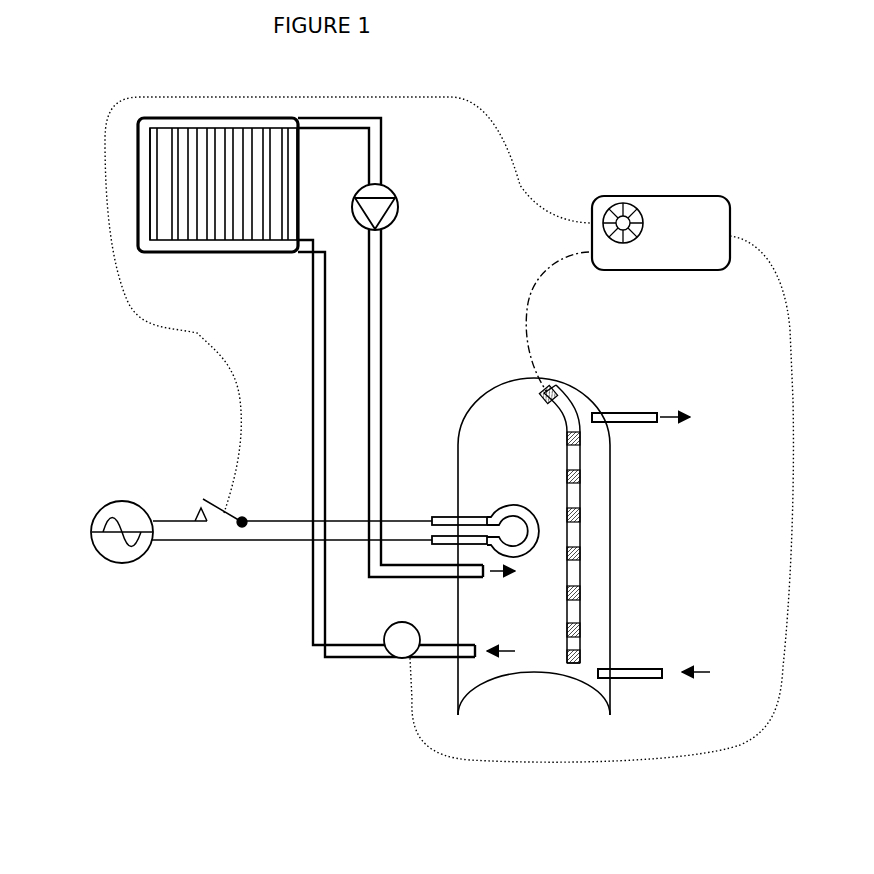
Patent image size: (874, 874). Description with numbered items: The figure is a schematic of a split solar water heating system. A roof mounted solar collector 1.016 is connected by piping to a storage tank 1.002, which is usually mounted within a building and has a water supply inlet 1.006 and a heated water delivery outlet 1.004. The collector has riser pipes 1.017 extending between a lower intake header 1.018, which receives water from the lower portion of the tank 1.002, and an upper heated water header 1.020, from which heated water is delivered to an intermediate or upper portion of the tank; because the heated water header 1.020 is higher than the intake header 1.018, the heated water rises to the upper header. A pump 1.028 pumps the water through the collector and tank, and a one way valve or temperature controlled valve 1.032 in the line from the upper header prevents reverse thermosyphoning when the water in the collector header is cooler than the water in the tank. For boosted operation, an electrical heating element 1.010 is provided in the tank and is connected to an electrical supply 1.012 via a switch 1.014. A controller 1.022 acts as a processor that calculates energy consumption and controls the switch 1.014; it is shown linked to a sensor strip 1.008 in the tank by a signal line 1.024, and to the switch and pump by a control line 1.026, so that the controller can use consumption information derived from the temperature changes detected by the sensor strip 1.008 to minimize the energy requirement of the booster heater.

The storage tank 1.002 is at (607, 517).
The heated water delivery outlet 1.004 is at (653, 398).
The water supply inlet 1.006 is at (627, 680).
The sensor strip 1.008 is at (578, 607).
The electrical heating element 1.010 is at (507, 505).
The electrical supply 1.012 is at (148, 558).
The switch 1.014 is at (197, 517).
The solar collector 1.016 is at (137, 130).
The riser pipes 1.017 is at (150, 175).
The lower intake header 1.018 is at (290, 260).
The upper heated water header 1.020 is at (303, 125).
The controller 1.022 is at (661, 233).
The sensor signal line 1.024 is at (530, 286).
The control signal line 1.026 is at (513, 163).
The pump 1.028 is at (400, 656).
The one way valve or temperature controlled valve 1.032 is at (405, 218).